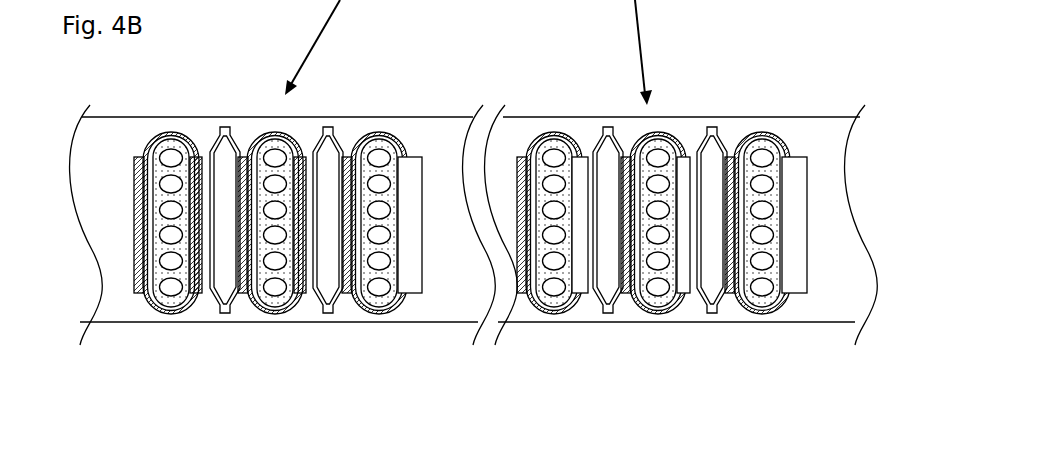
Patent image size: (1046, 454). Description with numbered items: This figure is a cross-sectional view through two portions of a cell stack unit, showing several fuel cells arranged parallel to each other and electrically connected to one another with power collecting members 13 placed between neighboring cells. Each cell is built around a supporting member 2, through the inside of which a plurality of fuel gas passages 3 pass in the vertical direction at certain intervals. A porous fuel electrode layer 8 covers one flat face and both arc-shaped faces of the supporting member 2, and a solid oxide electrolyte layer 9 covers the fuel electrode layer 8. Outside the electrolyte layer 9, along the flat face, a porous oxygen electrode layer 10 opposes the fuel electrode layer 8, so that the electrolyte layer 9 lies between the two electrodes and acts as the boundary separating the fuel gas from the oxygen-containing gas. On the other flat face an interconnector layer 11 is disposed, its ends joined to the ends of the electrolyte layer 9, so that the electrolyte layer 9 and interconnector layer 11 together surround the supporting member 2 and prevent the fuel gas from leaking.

The supporting member 2 is at (742, 314).
The fuel gas passages 3 is at (732, 286).
The fuel electrode layer 8 is at (777, 298).
The solid oxide electrolyte layer 9 is at (765, 300).
The oxygen electrode layer 10 is at (730, 290).
The interconnector layer 11 is at (793, 160).
The power collecting members 13 is at (712, 129).